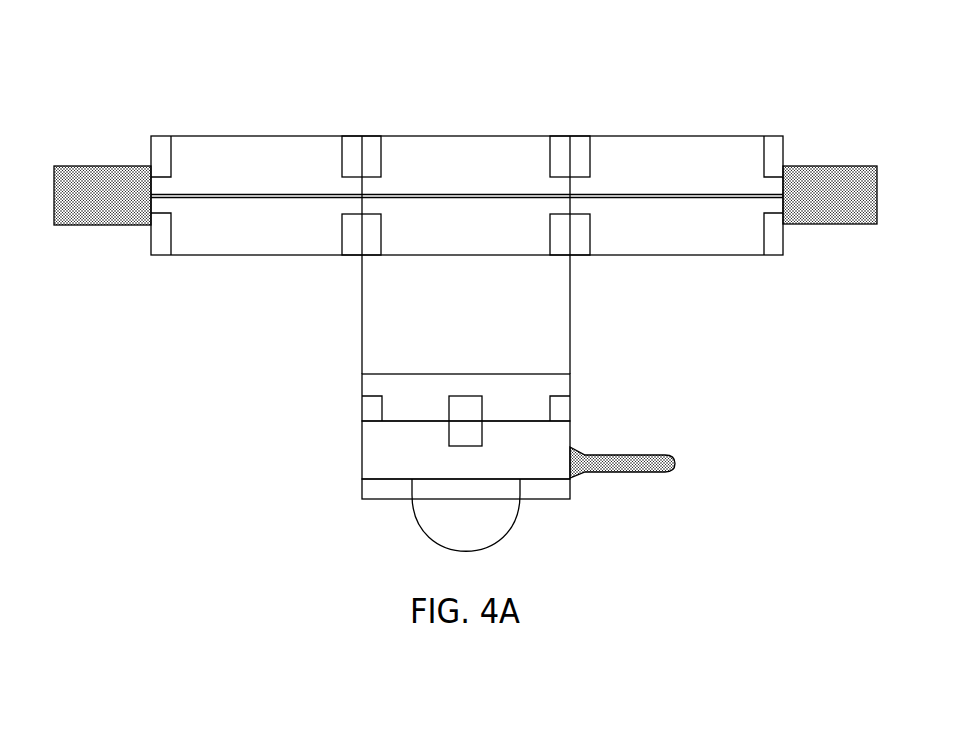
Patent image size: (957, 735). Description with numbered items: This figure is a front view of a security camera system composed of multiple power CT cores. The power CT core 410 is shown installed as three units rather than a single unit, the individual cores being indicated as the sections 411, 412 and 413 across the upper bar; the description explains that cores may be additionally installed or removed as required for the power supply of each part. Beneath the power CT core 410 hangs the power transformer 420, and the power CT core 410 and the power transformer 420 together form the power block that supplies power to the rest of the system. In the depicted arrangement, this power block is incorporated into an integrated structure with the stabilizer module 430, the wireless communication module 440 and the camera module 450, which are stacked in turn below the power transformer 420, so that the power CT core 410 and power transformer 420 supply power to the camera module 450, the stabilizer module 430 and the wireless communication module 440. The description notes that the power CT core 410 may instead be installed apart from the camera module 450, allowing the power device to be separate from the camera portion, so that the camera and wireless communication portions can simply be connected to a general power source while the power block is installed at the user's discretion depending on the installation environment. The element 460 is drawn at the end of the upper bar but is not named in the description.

The power CT core 410 is at (467, 129).
The first portion of structure 410 411 is at (301, 148).
The second portion of structure 410 412 is at (461, 148).
The third portion of structure 410 413 is at (666, 160).
The power transformer 420 is at (372, 316).
The stabilizer module 430 is at (372, 383).
The wireless communication module 440 is at (372, 446).
The camera module 450 is at (372, 489).
The side block 460 is at (831, 175).